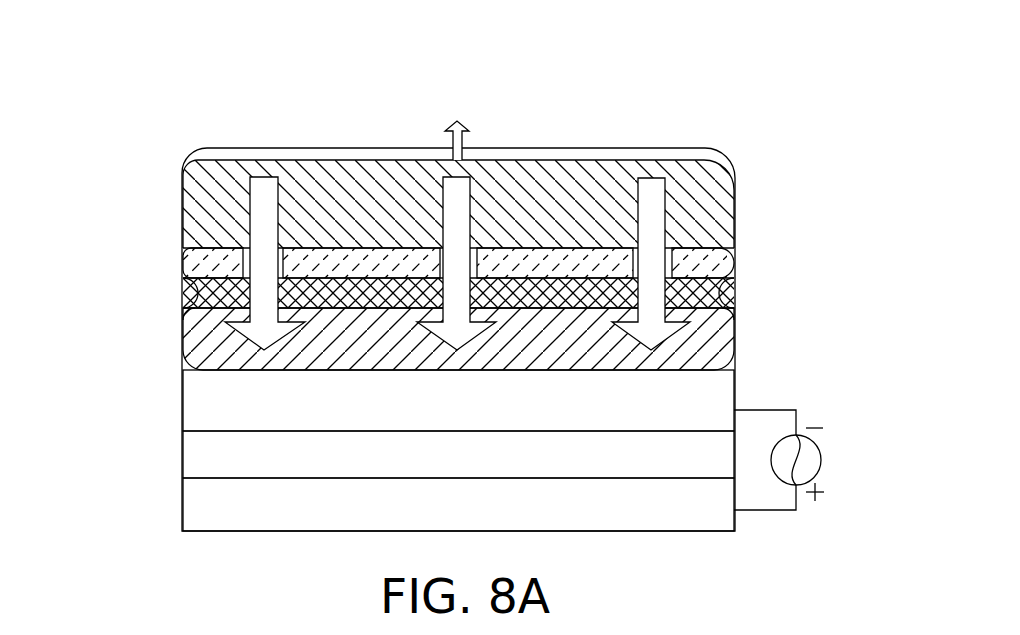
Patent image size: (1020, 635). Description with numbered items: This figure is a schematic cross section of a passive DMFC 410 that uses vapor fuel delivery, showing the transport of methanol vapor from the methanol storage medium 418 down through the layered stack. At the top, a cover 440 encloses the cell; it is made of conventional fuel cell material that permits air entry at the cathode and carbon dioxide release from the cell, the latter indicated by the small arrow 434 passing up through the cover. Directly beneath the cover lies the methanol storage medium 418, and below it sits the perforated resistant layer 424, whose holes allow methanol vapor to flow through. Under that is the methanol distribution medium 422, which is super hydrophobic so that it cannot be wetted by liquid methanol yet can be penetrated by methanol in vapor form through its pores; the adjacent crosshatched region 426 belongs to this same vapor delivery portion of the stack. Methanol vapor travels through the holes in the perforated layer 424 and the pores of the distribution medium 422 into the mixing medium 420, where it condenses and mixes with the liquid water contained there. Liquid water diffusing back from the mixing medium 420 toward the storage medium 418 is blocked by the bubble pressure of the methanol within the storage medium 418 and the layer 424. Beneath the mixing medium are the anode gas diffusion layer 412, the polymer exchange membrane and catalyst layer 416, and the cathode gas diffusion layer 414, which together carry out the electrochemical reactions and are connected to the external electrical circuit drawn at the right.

The passive DMFC 410 is at (145, 113).
The cover 440 is at (233, 147).
The arrow 434 is at (450, 137).
The methanol storage medium 418 is at (197, 207).
The methanol distribution medium 422 is at (193, 295).
The resistant layer 424 is at (717, 260).
The mesh layer 426 is at (720, 287).
The mixing medium 420 is at (193, 342).
The anode gas diffusion layer 412 is at (197, 397).
The polymer exchange membrane and catalyst layer 416 is at (197, 457).
The cathode gas diffusion layer 414 is at (197, 504).